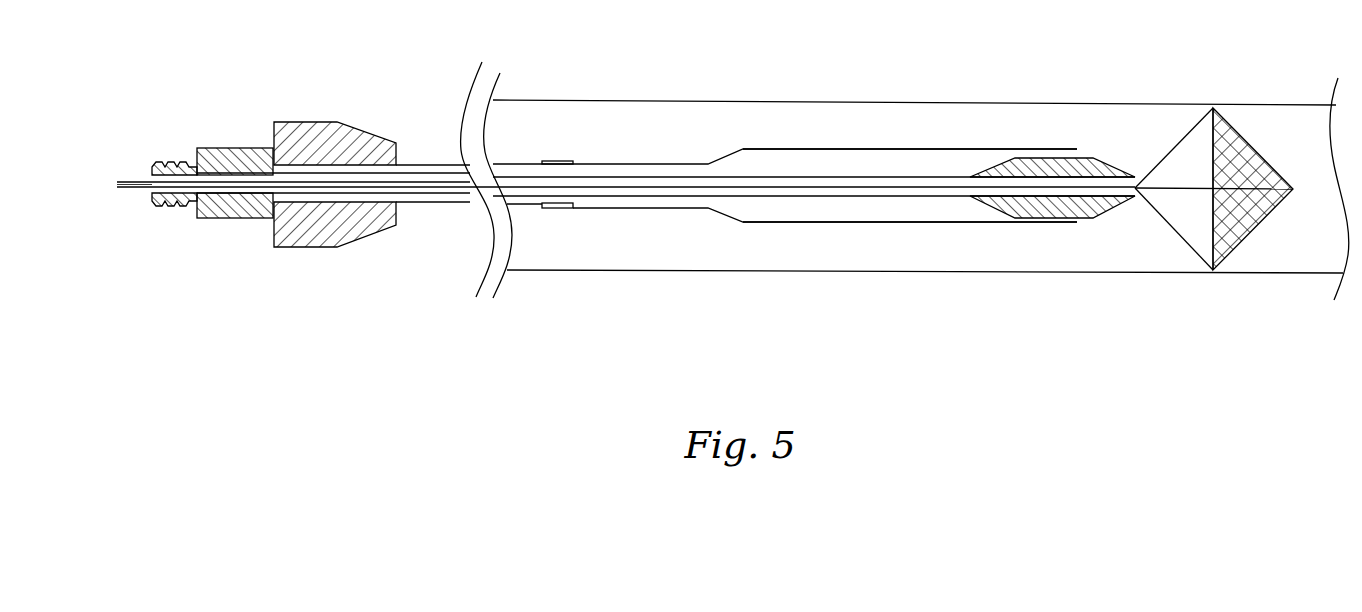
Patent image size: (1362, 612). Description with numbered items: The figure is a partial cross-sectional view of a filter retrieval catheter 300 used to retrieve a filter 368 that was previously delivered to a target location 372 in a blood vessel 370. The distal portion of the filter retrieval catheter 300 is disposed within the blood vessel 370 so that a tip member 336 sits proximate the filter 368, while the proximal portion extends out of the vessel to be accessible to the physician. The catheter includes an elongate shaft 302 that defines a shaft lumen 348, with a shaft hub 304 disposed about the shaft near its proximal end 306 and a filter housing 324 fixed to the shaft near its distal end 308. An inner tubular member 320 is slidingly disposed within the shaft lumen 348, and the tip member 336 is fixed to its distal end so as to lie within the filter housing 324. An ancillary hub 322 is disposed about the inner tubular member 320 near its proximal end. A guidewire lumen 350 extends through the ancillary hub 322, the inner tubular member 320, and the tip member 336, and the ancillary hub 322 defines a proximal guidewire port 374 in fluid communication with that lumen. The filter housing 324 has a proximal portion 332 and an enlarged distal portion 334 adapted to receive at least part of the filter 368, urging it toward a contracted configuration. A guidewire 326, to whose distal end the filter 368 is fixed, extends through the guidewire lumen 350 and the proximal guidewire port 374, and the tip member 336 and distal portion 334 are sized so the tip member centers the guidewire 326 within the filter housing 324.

The filter retrieval catheter 300 is at (627, 343).
The elongate shaft 302 is at (472, 72).
The shaft hub 304 is at (305, 121).
The proximal end 306 is at (405, 230).
The distal end 308 is at (537, 224).
The inner tubular member 320 is at (906, 176).
The ancillary hub 322 is at (233, 147).
The filter housing 324 is at (802, 148).
The guidewire 326 is at (133, 180).
The proximal portion 332 is at (666, 229).
The distal portion 334 is at (956, 247).
The tip member 336 is at (1120, 146).
The shaft lumen 348 is at (441, 168).
The guidewire lumen 350 is at (641, 185).
The filter 368 is at (1237, 247).
The blood vessel 370 is at (1045, 273).
The target location 372 is at (1191, 285).
The proximal guidewire port 374 is at (142, 189).